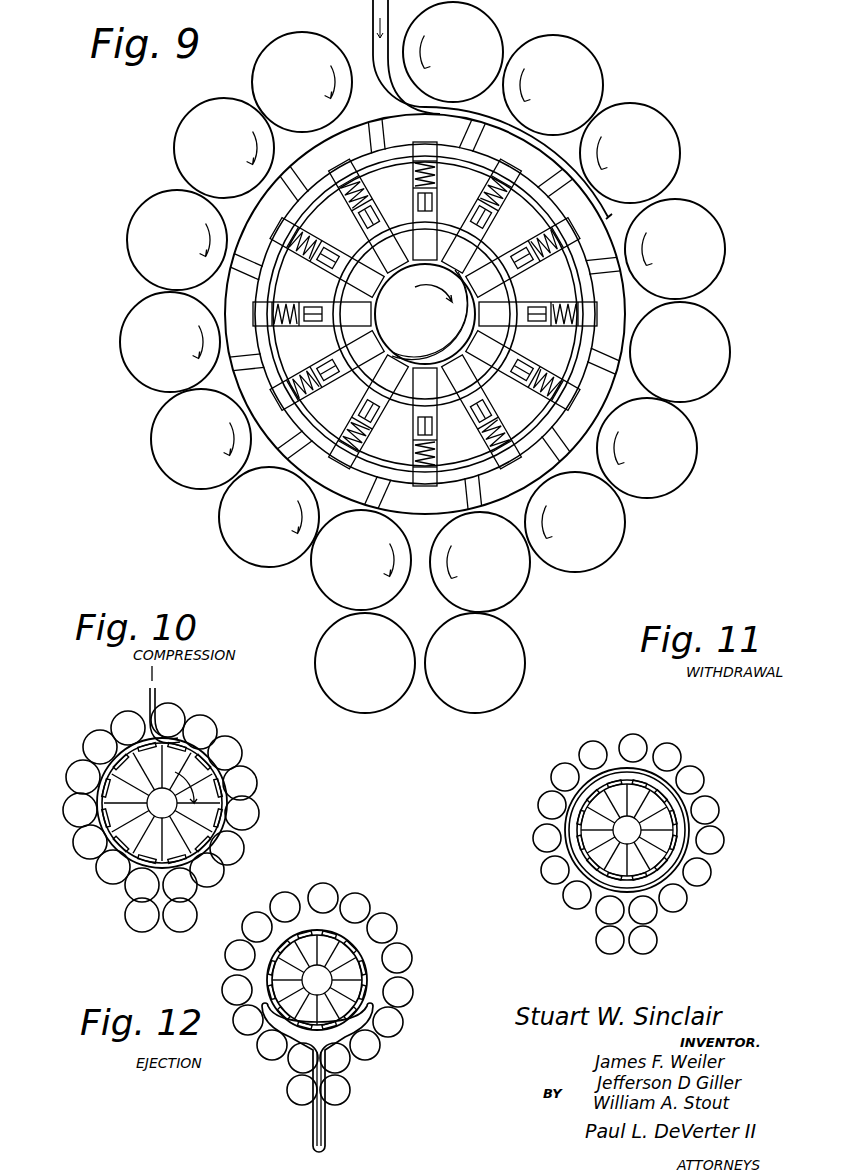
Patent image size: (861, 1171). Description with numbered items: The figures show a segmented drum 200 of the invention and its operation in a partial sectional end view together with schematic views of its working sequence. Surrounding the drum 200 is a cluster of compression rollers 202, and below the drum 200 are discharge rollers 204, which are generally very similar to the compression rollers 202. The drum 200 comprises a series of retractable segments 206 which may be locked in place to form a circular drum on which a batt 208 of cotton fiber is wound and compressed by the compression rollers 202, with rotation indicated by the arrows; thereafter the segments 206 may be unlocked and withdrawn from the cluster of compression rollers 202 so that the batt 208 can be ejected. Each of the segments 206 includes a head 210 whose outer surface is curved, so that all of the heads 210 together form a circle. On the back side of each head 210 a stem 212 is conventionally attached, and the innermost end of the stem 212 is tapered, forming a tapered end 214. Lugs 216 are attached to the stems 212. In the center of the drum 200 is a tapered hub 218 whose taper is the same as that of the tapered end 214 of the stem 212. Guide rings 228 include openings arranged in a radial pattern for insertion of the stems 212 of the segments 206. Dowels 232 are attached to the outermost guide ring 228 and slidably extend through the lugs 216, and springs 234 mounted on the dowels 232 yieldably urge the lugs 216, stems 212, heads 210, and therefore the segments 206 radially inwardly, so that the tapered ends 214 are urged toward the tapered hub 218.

In FIG. 9, the segmented drum 200 is at (238, 422).
In FIG. 10, the segmented drum 200 is at (172, 811).
In FIG. 11, the segmented drum 200 is at (650, 852).
In FIG. 9, the compression rollers 202 is at (466, 53).
In FIG. 10, the compression rollers 202 is at (246, 753).
In FIG. 11, the compression rollers 202 is at (557, 887).
In FIG. 12, the compression rollers 202 is at (406, 992).
In FIG. 9, the discharge rollers 204 is at (378, 671).
In FIG. 10, the discharge rollers 204 is at (175, 922).
In FIG. 11, the discharge rollers 204 is at (610, 955).
In FIG. 12, the discharge rollers 204 is at (300, 1100).
In FIG. 9, the retractable segments 206 is at (227, 313).
In FIG. 10, the retractable segments 206 is at (92, 750).
In FIG. 11, the retractable segments 206 is at (590, 797).
In FIG. 9, the batt 208 is at (371, 7).
In FIG. 10, the batt 208 is at (158, 698).
In FIG. 11, the batt 208 is at (673, 794).
In FIG. 12, the batt 208 is at (326, 1130).
In FIG. 9, the head 210 is at (233, 243).
In FIG. 9, the stem 212 is at (328, 293).
In FIG. 9, the tapered end 214 is at (372, 262).
In FIG. 9, the lug 216 is at (412, 190).
In FIG. 9, the tapered hub 218 is at (437, 325).
In FIG. 9, the guide rings 228 is at (484, 247).
In FIG. 9, the dowels 232 is at (528, 294).
In FIG. 9, the springs 234 is at (534, 331).